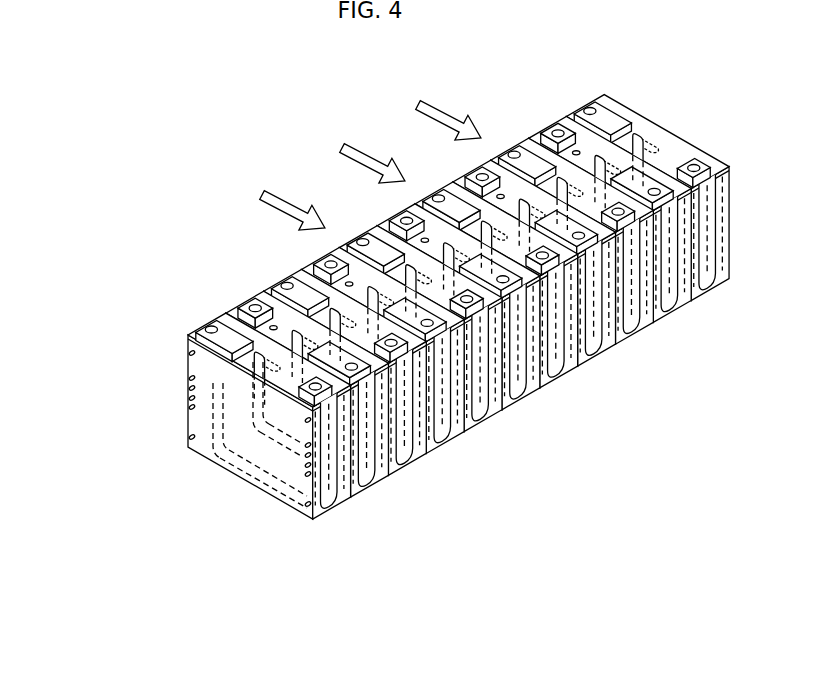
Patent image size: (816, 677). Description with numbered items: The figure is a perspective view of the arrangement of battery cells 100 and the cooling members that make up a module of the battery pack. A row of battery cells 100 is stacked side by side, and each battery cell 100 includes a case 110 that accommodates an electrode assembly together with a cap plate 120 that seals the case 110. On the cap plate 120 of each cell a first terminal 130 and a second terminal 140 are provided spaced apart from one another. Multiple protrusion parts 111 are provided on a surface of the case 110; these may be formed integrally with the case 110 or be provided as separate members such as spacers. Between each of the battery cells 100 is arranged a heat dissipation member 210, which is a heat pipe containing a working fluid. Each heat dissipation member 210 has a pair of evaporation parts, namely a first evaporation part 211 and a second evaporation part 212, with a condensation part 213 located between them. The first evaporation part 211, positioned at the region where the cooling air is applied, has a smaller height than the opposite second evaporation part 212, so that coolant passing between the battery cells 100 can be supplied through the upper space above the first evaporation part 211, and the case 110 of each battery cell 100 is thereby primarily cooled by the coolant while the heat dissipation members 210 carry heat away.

The battery cell 100 is at (240, 299).
The case 110 is at (187, 363).
The protrusion parts 111 is at (187, 412).
The cap plate 120 is at (187, 335).
The first terminal 130 is at (208, 330).
The second terminal 140 is at (325, 392).
The heat dissipation member 210 is at (267, 480).
The first evaporation part 211 is at (210, 417).
The second evaporation part 212 is at (332, 484).
The condensation part 213 is at (267, 487).